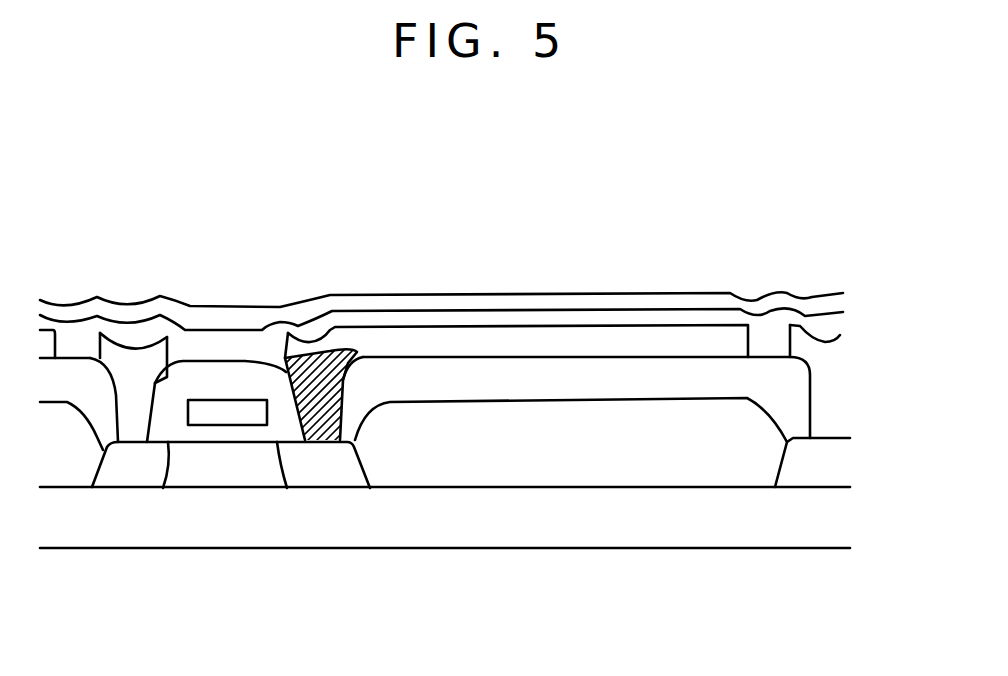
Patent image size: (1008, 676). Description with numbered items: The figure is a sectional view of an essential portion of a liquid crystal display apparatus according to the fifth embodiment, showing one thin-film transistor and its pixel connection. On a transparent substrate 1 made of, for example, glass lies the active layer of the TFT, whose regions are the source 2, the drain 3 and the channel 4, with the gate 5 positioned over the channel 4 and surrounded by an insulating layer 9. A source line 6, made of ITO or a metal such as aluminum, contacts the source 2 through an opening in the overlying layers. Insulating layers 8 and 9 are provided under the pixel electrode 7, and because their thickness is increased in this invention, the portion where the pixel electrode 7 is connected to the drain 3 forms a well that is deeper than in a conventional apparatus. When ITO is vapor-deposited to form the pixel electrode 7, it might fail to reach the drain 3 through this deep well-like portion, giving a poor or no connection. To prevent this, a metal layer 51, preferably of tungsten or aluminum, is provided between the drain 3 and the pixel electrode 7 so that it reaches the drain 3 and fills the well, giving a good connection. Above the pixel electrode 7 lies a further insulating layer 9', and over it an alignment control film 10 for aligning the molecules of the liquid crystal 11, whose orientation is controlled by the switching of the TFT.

The transparent substrate 1 is at (792, 523).
The source 2 is at (137, 478).
The drain 3 is at (327, 477).
The channel 4 is at (198, 478).
The gate 5 is at (237, 415).
The source line 6 is at (112, 347).
The pixel electrode 7 is at (468, 337).
The insulating layer 8 is at (615, 477).
The insulating layer 9 is at (425, 440).
The insulating layer 9' is at (474, 337).
The alignment control film 10 is at (835, 303).
The liquid crystal 11 is at (830, 275).
The metal layer 51 is at (325, 360).